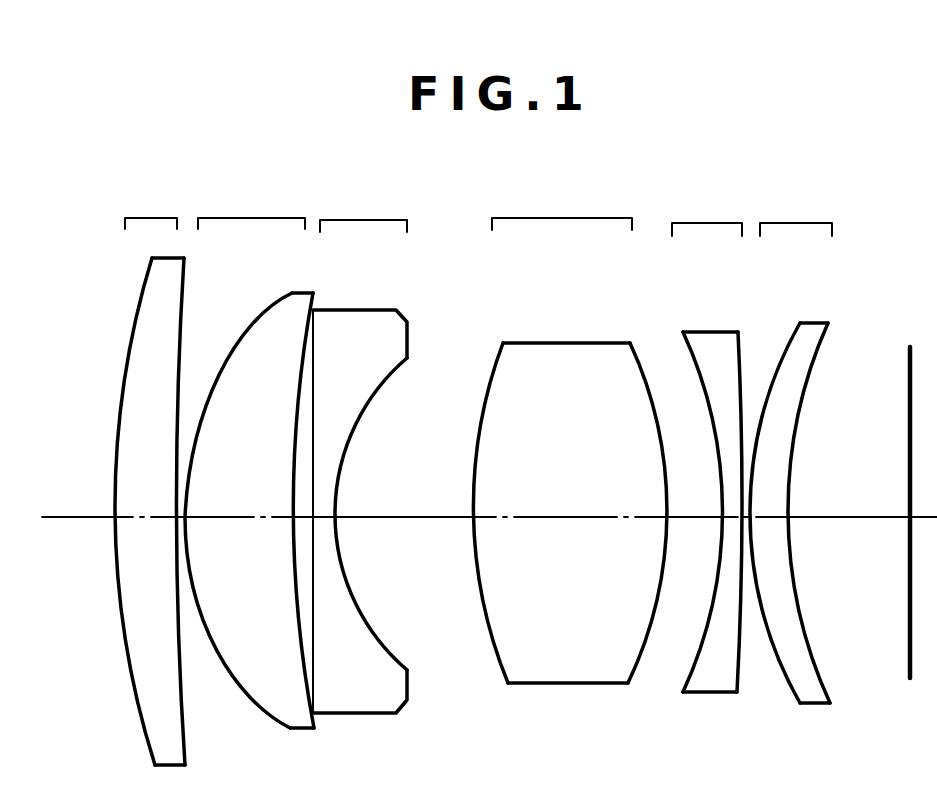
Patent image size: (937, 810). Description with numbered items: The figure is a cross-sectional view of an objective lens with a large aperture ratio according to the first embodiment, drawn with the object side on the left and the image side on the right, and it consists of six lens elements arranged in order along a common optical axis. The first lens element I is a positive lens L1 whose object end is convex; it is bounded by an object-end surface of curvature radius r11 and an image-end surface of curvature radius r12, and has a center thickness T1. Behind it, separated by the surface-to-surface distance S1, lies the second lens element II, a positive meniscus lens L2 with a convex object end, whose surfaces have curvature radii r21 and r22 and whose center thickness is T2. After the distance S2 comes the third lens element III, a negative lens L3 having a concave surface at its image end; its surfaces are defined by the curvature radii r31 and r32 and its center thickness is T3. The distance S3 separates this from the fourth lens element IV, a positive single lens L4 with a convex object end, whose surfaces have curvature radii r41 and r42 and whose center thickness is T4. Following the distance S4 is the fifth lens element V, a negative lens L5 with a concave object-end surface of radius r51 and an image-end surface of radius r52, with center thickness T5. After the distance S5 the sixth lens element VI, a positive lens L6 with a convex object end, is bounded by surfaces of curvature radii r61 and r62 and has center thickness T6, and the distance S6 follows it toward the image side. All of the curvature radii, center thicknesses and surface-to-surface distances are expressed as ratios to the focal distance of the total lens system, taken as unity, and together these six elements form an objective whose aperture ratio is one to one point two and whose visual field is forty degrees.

The first lens element I is at (151, 205).
The second lens element II is at (251, 205).
The third lens element III is at (363, 207).
The fourth lens element IV is at (562, 205).
The fifth lens element V is at (707, 211).
The sixth lens element VI is at (796, 211).
The positive lens L1 is at (160, 501).
The positive meniscus lens L2 is at (276, 483).
The negative lens L3 is at (387, 489).
The positive single lens L4 is at (569, 481).
The negative lens L5 is at (727, 472).
The positive lens L6 is at (830, 483).
The curvature radius r11 is at (143, 298).
The curvature radius r12 is at (187, 283).
The curvature radius r21 is at (262, 314).
The curvature radius r22 is at (314, 316).
The curvature radius r31 is at (317, 348).
The curvature radius r32 is at (390, 381).
The curvature radius r41 is at (497, 366).
The curvature radius r42 is at (642, 355).
The curvature radius r51 is at (676, 355).
The curvature radius r52 is at (743, 343).
The curvature radius r61 is at (792, 339).
The curvature radius r62 is at (825, 347).
The center thickness T1 is at (144, 498).
The center thickness T2 is at (237, 498).
The center thickness T3 is at (330, 508).
The center thickness T4 is at (572, 498).
The center thickness T5 is at (733, 513).
The center thickness T6 is at (772, 515).
The surface-to-surface distance S1 is at (178, 523).
The surface-to-surface distance S2 is at (297, 522).
The surface-to-surface distance S3 is at (404, 534).
The surface-to-surface distance S4 is at (694, 535).
The surface-to-surface distance S5 is at (750, 530).
The surface-to-surface distance S6 is at (849, 535).